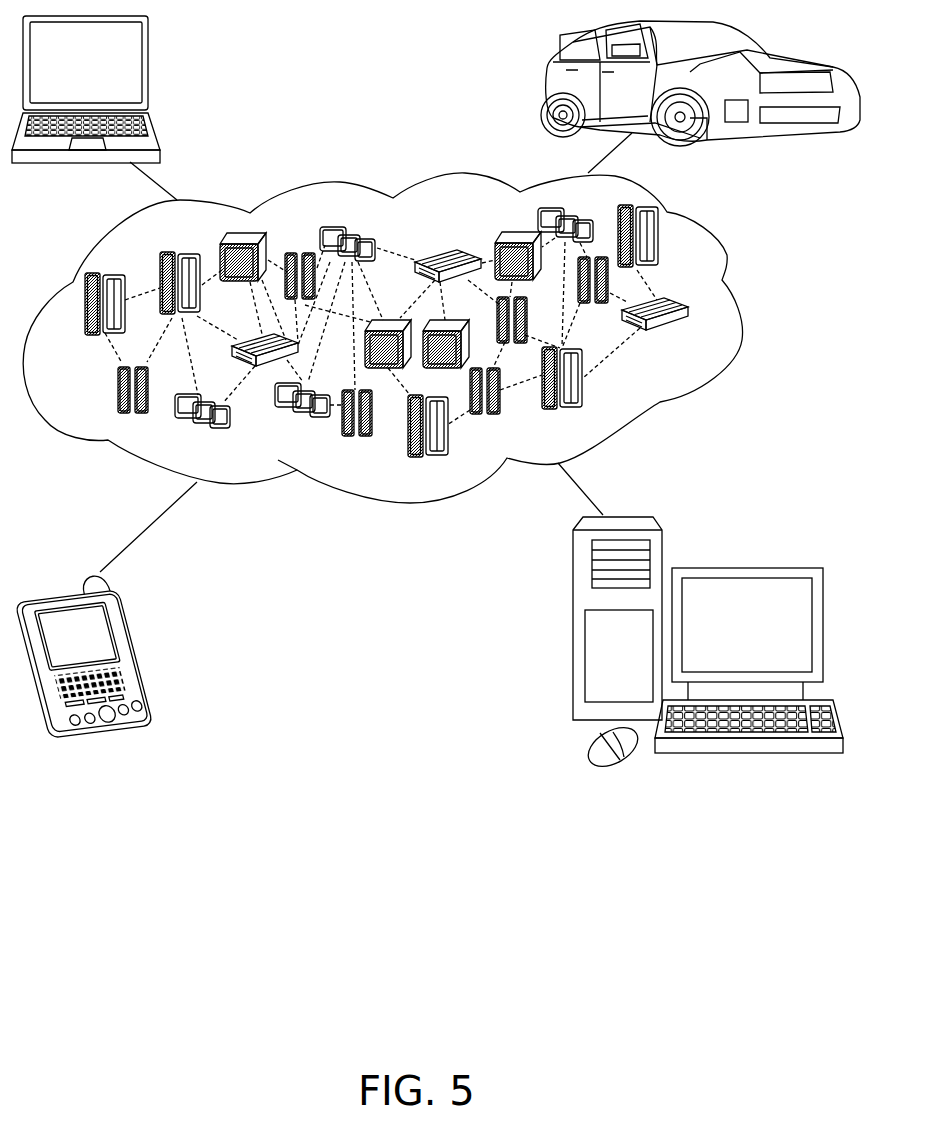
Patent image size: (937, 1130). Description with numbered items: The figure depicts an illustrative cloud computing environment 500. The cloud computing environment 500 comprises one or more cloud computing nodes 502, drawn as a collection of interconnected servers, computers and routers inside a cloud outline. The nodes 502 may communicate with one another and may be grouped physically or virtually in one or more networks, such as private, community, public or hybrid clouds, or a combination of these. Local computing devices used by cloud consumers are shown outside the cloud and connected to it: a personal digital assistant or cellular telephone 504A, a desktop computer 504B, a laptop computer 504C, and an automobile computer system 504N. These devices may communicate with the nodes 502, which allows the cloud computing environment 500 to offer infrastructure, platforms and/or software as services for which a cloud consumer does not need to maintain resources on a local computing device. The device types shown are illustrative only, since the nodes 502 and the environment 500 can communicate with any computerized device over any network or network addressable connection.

The cloud computing environment 500 is at (700, 310).
The cloud computing nodes 502 is at (694, 339).
The personal digital assistant (PDA) or cellular telephone 504A is at (128, 625).
The desktop computer 504B is at (733, 568).
The laptop computer 504C is at (152, 45).
The automobile computer system 504N is at (548, 88).